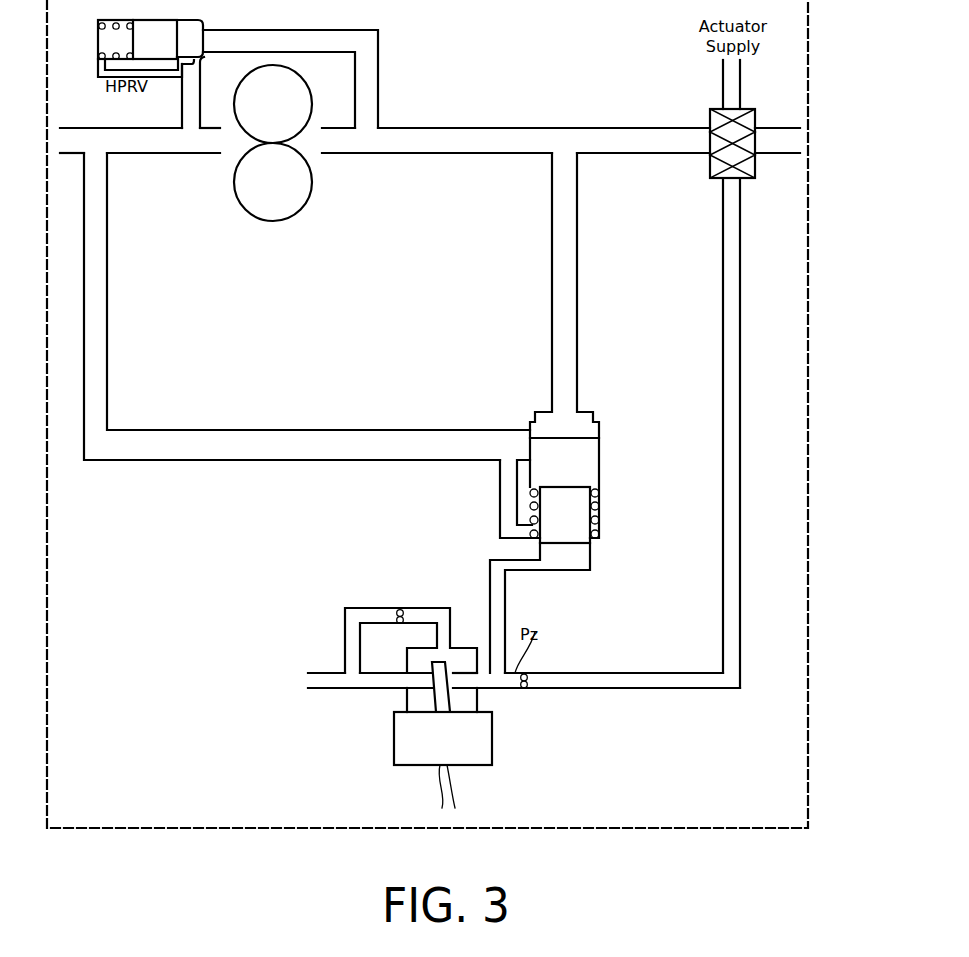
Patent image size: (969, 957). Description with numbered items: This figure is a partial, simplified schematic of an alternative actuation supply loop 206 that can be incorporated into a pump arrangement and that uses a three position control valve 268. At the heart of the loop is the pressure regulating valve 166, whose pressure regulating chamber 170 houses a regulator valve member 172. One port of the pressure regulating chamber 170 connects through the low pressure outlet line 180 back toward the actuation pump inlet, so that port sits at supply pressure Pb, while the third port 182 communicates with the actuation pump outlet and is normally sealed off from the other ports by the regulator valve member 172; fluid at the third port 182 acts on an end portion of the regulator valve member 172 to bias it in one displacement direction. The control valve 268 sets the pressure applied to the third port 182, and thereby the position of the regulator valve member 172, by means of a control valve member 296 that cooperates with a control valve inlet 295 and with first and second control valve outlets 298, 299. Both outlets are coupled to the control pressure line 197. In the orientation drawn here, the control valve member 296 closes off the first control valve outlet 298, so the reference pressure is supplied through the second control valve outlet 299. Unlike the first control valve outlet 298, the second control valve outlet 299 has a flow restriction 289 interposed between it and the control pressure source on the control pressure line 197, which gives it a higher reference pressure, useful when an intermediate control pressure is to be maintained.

The pressure regulating valve 166 is at (478, 517).
The pressure regulating chamber 170 is at (593, 428).
The regulator valve member 172 is at (578, 513).
The low pressure outlet line 180 is at (178, 437).
The third port 182 is at (577, 567).
The control pressure line 197 is at (323, 673).
The actuation supply loop 206 is at (808, 512).
The control valve 268 is at (505, 773).
The flow restriction 289 is at (370, 600).
The control valve inlet 295 is at (460, 680).
The control valve member 296 is at (435, 702).
The first control valve outlet 298 is at (418, 673).
The second control valve outlet 299 is at (445, 645).